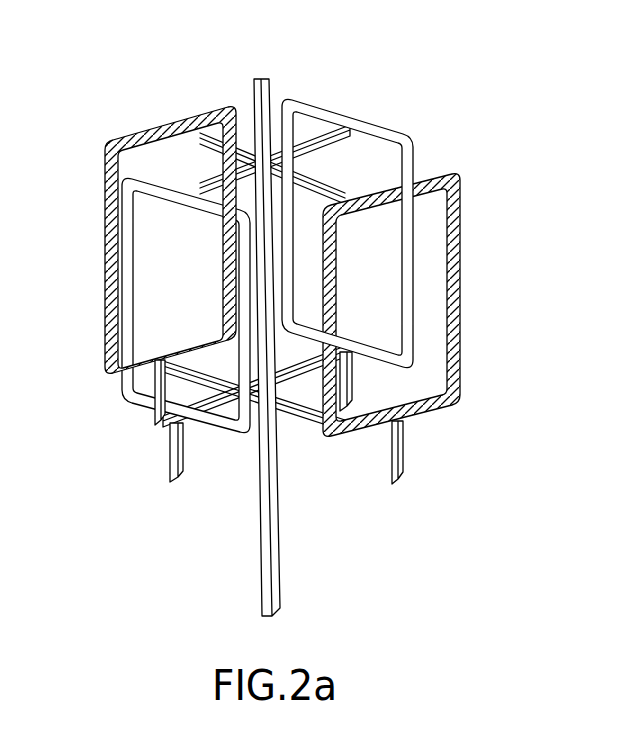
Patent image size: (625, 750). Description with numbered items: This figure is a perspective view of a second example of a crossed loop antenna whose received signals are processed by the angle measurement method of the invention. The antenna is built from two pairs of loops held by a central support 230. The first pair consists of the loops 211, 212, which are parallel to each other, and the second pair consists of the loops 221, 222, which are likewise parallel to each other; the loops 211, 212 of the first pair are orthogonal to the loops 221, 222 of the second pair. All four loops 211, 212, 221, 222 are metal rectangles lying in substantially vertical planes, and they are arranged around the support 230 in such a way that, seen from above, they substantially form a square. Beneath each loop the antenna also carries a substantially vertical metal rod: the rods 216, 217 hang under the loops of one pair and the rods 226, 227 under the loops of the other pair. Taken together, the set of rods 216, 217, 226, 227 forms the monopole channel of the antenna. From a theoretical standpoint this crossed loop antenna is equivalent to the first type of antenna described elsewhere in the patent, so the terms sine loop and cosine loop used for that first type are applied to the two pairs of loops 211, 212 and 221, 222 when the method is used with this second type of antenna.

The loop 211 is at (140, 131).
The loop 212 is at (453, 202).
The loop 221 is at (133, 283).
The loop 222 is at (378, 130).
The support 230 is at (271, 88).
The metal rod 216 is at (155, 397).
The metal rod 217 is at (176, 460).
The metal rod 226 is at (352, 380).
The metal rod 227 is at (400, 458).